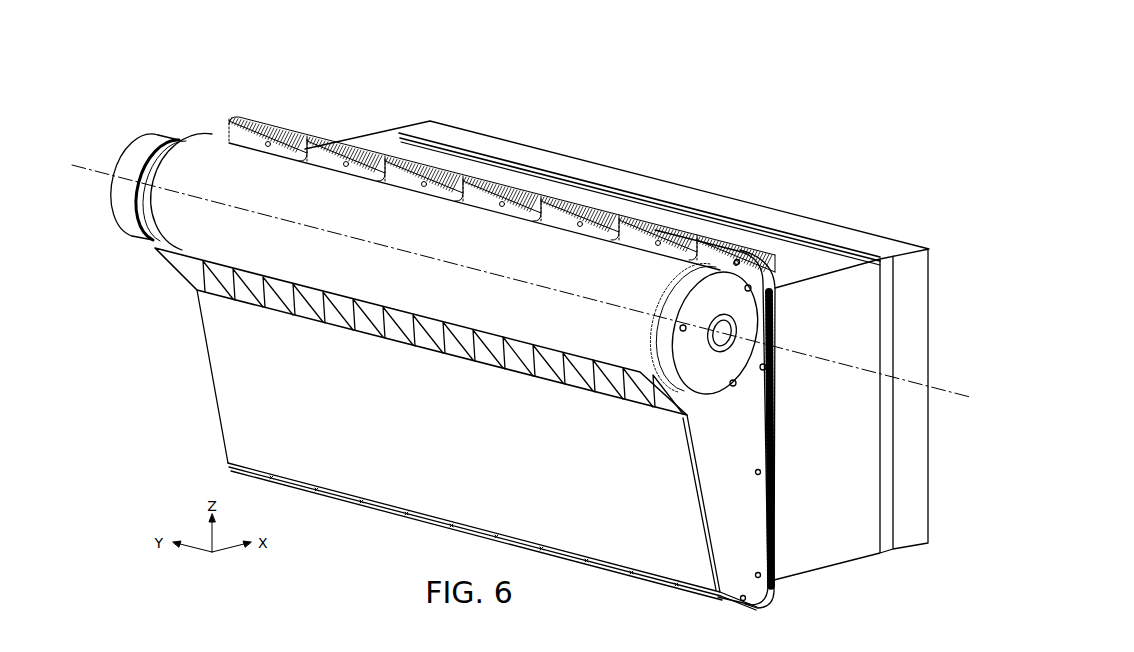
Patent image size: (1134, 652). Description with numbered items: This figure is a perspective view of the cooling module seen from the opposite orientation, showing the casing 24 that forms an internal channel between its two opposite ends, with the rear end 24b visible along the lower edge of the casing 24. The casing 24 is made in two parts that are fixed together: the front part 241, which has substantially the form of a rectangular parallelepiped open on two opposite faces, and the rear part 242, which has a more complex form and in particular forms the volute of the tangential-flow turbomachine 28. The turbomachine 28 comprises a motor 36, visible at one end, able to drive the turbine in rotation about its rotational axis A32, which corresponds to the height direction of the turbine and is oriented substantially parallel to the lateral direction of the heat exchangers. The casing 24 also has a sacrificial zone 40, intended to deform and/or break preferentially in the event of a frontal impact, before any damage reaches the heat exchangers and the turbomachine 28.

The casing 24 is at (839, 187).
The front part 241 is at (796, 255).
The rear part 242 is at (748, 268).
The end 24b is at (342, 525).
The tangential-flow turbomachine 28 is at (134, 117).
The motor 36 is at (133, 163).
The sacrificial zone 40 is at (400, 137).
The rotational axis A32 is at (955, 393).